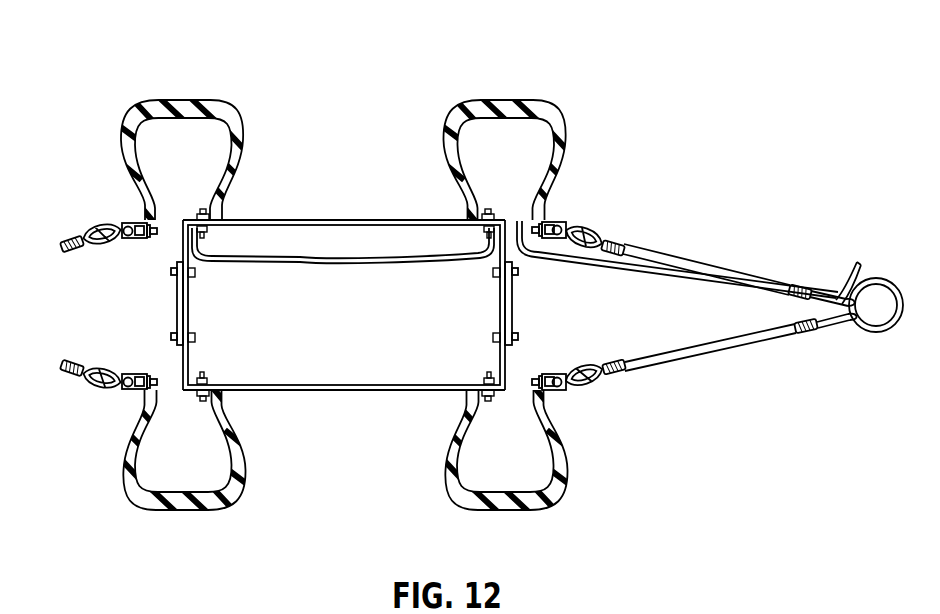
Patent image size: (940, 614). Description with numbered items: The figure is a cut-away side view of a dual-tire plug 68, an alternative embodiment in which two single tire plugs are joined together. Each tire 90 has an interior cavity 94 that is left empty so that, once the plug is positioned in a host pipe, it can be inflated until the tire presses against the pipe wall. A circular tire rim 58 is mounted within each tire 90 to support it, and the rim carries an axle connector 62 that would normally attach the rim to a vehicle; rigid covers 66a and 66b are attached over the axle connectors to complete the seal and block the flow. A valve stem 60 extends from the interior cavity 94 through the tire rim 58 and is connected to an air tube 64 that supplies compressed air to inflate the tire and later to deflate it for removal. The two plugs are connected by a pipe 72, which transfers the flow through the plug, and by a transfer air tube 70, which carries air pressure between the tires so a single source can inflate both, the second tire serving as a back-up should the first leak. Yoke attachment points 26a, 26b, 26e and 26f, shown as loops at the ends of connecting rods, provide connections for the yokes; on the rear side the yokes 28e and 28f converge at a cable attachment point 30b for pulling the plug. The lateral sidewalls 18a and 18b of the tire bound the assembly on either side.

The dual-tire plug 68 is at (44, 40).
The interior cavity 94 is at (329, 133).
The tire 90 is at (354, 137).
The yoke attachment point 26b is at (108, 200).
The yoke attachment point 26a is at (92, 404).
The yoke attachment point 26f is at (602, 218).
The yoke attachment point 26e is at (607, 401).
The pipe 72 is at (344, 256).
The transfer air tube 70 is at (343, 209).
The yoke 28f is at (739, 259).
The yoke 28e is at (741, 372).
The air tube 64 is at (842, 256).
The tire rim 58 is at (356, 305).
The valve stem 60 is at (517, 268).
The rigid cover 66a is at (119, 308).
The rigid cover 66b is at (560, 303).
The axle connector 62 is at (345, 305).
The cable attachment point 30b is at (869, 338).
The lateral sidewall 18a is at (139, 465).
The rear lateral sidewall 18b is at (553, 453).